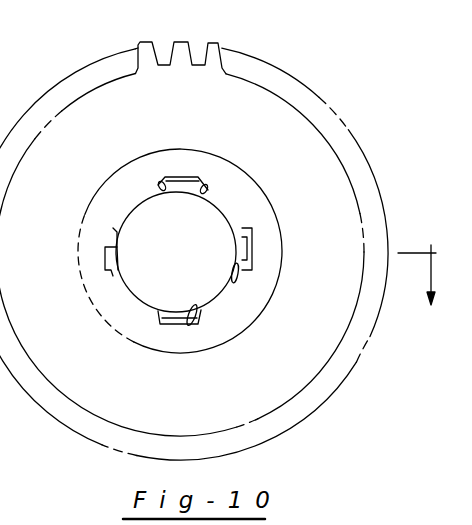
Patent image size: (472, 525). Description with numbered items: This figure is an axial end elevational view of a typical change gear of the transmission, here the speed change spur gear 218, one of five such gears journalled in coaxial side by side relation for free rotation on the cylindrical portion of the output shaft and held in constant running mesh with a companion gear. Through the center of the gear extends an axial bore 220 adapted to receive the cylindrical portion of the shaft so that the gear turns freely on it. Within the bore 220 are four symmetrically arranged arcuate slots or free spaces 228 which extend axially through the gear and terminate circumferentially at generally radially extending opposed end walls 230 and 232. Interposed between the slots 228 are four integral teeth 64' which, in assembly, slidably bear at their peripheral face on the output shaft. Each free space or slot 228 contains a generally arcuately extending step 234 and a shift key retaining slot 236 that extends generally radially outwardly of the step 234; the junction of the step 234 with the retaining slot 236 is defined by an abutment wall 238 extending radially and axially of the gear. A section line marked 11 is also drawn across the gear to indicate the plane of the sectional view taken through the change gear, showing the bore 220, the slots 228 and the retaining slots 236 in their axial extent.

The speed change spur gear 218 is at (270, 50).
The axial bore 220 is at (208, 294).
The arcuate slot 228 is at (230, 243).
The end wall 230 is at (155, 188).
The end wall 232 is at (112, 230).
The step 234 is at (200, 183).
The shift key retaining slot 236 is at (172, 177).
The abutment wall 238 is at (182, 175).
The integral tooth 64' is at (201, 236).
The section line 11 is at (444, 213).